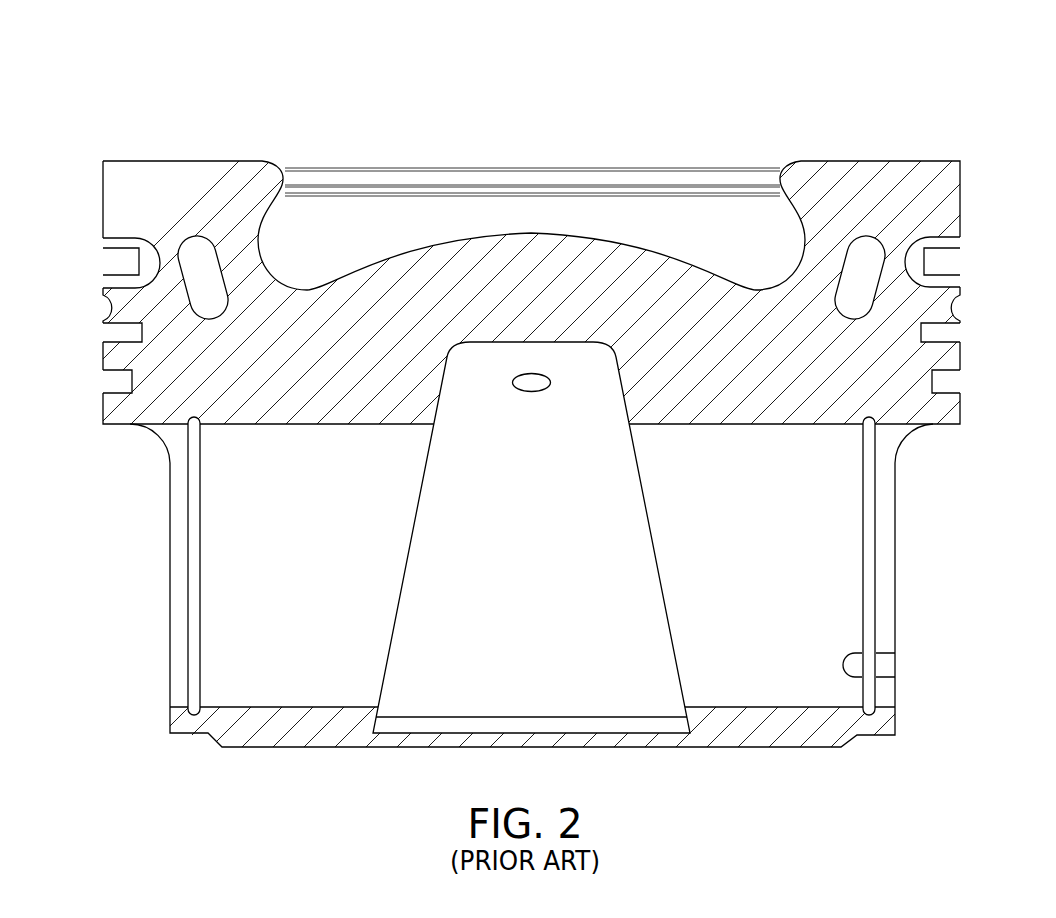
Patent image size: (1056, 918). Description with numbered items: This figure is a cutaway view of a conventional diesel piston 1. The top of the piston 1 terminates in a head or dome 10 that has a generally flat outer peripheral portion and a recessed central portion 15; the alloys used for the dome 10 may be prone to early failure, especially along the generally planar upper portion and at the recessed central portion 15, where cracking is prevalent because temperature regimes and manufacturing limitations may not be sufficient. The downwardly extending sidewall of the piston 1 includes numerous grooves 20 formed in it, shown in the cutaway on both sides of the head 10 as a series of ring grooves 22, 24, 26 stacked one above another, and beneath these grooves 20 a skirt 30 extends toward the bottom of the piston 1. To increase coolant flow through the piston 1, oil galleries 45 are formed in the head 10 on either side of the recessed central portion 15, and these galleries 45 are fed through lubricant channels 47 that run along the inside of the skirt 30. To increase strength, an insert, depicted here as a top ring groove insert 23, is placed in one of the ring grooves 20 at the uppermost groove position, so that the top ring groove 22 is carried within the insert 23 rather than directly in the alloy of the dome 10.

The diesel piston 1 is at (166, 105).
The head 10 is at (932, 198).
The recessed central portion 15 is at (318, 233).
The grooves 20 is at (973, 235).
The top ring groove 22 is at (107, 262).
The top ring groove insert 23 is at (103, 243).
The second ring groove 24 is at (108, 328).
The oil ring groove 26 is at (108, 380).
The skirt 30 is at (895, 558).
The oil galleries 45 is at (860, 262).
The lubricant channels 47 is at (880, 665).